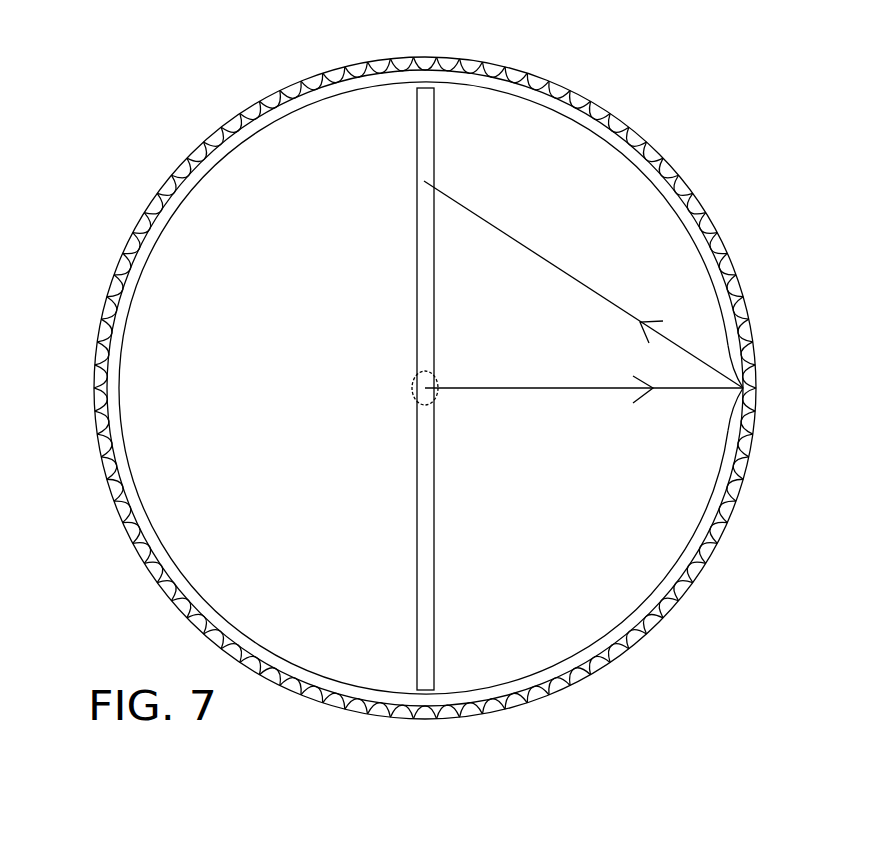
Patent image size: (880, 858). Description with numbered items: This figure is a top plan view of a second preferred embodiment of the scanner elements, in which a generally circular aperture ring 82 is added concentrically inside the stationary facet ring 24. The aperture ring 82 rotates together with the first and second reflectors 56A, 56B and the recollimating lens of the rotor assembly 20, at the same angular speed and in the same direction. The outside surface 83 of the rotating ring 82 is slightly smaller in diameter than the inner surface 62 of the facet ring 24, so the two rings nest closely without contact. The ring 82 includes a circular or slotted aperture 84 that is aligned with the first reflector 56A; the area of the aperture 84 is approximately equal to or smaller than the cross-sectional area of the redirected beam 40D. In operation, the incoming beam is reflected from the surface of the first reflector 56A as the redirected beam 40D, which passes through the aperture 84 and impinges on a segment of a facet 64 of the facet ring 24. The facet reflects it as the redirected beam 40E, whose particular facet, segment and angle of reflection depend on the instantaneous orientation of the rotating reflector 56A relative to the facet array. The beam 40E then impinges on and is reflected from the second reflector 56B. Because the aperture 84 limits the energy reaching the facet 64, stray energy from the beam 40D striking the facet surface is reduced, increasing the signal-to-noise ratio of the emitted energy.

The rotor assembly 20 is at (397, 393).
The facet ring 24 is at (585, 672).
The inner surface 62 is at (118, 311).
The aperture ring 82 is at (123, 425).
The outside surface 83 is at (97, 388).
The aperture 84 is at (742, 392).
The facet 64 is at (745, 390).
The first reflector 56A is at (410, 387).
The second reflector 56B is at (423, 547).
The redirected beam 40D is at (578, 388).
The redirected beam 40E is at (525, 242).